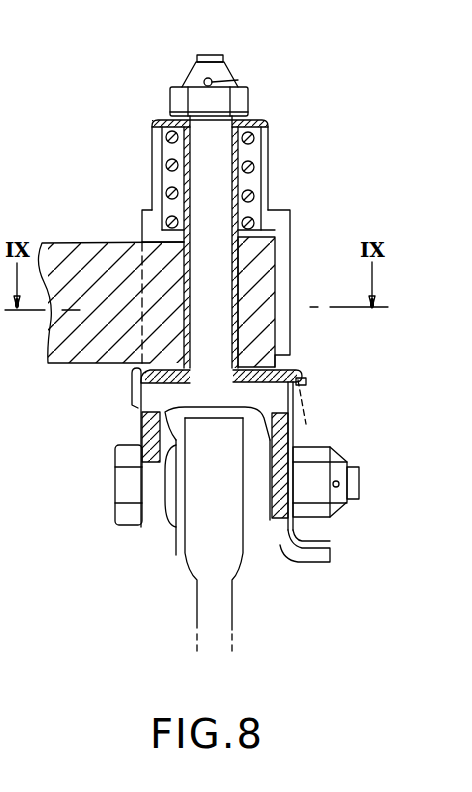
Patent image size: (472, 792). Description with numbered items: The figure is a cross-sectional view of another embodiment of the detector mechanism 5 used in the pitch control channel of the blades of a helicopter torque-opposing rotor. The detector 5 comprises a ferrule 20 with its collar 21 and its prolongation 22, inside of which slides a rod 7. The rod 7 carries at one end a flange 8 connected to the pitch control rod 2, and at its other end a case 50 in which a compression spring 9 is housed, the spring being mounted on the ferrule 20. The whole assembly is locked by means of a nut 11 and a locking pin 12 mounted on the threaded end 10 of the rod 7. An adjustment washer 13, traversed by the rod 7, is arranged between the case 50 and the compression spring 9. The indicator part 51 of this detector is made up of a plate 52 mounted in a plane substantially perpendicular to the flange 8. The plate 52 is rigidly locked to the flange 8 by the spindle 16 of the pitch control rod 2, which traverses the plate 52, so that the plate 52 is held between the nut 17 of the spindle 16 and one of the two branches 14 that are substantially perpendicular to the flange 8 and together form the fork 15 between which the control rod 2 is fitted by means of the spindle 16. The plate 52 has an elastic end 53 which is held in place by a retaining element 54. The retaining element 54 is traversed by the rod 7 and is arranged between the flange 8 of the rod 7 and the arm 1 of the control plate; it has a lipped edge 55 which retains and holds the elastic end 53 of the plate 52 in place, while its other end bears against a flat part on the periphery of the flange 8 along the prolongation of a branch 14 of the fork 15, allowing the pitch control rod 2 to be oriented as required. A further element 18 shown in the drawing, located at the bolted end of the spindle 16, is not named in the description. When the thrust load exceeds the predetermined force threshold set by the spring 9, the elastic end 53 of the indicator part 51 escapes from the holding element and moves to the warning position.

The arm 1 is at (63, 253).
The pitch control rod 2 is at (223, 592).
The detector mechanism 5 is at (283, 130).
The rod 7 is at (217, 148).
The flange 8 is at (273, 395).
The compression spring 9 is at (168, 172).
The threaded end 10 is at (206, 57).
The nut 11 is at (176, 100).
The locking pin 12 is at (238, 80).
The adjustment washer 13 is at (168, 136).
The branch 14 is at (140, 442).
The fork 15 is at (140, 423).
The spindle 16 is at (155, 503).
The nut 17 is at (340, 497).
The nut 18 is at (358, 487).
The ferrule 20 is at (275, 282).
The collar 21 is at (157, 230).
The prolongation 22 is at (240, 176).
The case 50 is at (280, 238).
The indicator part 51 is at (300, 425).
The plate 52 is at (325, 540).
The elastic end 53 is at (312, 388).
The retaining element 54 is at (138, 372).
The lipped edge 55 is at (297, 360).